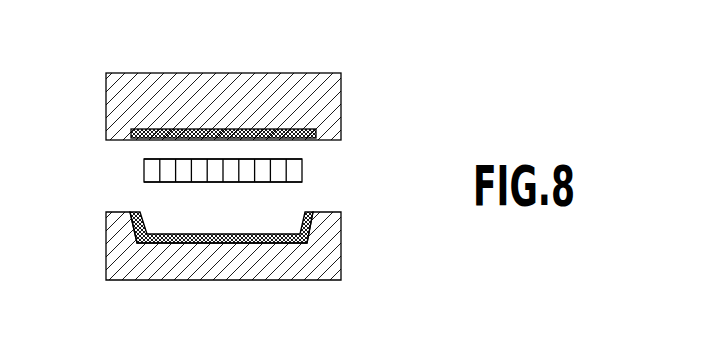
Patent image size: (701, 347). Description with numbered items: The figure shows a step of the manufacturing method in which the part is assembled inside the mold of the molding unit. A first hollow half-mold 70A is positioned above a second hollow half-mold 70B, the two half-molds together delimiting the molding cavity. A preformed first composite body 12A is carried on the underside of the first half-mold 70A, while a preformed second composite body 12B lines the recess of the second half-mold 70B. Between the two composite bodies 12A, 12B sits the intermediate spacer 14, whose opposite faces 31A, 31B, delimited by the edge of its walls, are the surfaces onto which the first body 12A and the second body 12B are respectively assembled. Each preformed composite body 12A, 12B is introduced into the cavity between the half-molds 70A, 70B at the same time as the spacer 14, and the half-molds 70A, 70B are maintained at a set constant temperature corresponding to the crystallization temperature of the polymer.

The first hollow half-mold 70A is at (268, 87).
The first composite body 12A is at (320, 134).
The intermediate spacer 14 is at (110, 167).
The first opposite face of the spacer 31A is at (167, 159).
The second opposite face of the spacer 31B is at (167, 184).
The second hollow half-mold 70B is at (310, 265).
The second composite body 12B is at (317, 223).